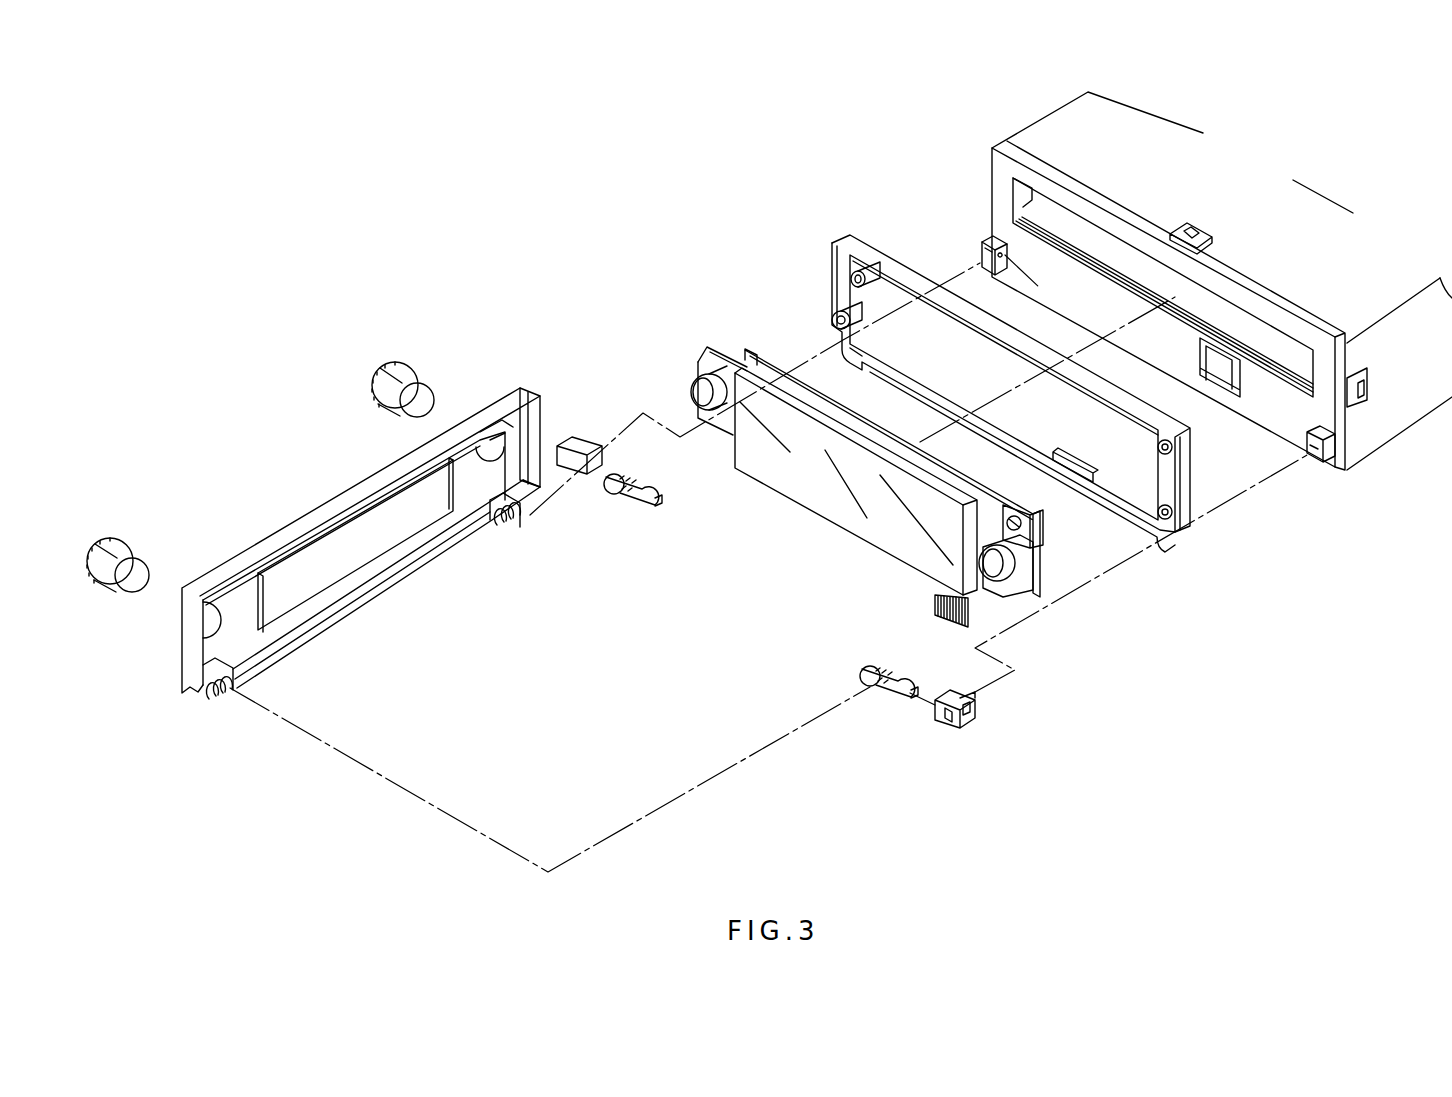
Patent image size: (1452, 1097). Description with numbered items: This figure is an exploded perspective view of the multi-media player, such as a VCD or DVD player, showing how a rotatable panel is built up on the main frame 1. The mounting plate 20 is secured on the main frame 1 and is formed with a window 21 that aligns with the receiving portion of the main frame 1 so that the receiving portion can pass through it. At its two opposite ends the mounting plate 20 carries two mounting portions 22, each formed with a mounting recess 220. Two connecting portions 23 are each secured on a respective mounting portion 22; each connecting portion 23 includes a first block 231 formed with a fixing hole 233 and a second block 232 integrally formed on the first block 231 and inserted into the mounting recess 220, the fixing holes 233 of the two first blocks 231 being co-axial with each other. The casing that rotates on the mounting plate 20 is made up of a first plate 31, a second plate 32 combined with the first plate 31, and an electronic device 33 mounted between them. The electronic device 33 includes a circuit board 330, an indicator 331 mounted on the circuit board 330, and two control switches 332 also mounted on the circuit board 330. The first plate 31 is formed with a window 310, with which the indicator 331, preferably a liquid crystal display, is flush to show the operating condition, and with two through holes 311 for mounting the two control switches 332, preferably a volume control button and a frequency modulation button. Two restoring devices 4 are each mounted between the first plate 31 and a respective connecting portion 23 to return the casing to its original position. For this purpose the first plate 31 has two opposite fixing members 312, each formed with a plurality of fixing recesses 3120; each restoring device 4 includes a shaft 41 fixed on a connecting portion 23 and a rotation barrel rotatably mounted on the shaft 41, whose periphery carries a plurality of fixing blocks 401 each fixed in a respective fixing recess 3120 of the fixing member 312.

The main frame 1 is at (1400, 407).
The mounting plate 20 is at (1347, 433).
The window 21 is at (987, 233).
The mounting portion 22 is at (985, 245).
The mounting recess 220 is at (980, 243).
The connecting portion 23 is at (576, 425).
The first block 231 is at (965, 712).
The second block 232 is at (970, 700).
The fixing hole 233 is at (950, 717).
The first plate 31 is at (190, 643).
The window 310 is at (397, 503).
The through hole 311 is at (490, 440).
The fixing member 312 is at (513, 542).
The fixing recess 3120 is at (525, 515).
The second plate 32 is at (1200, 493).
The electronic device 33 is at (700, 348).
The circuit board 330 is at (757, 363).
The indicator 331 is at (787, 487).
The control switch 332 is at (408, 365).
The restoring device 4 is at (613, 510).
The fixing block 401 is at (612, 507).
The shaft 41 is at (605, 475).